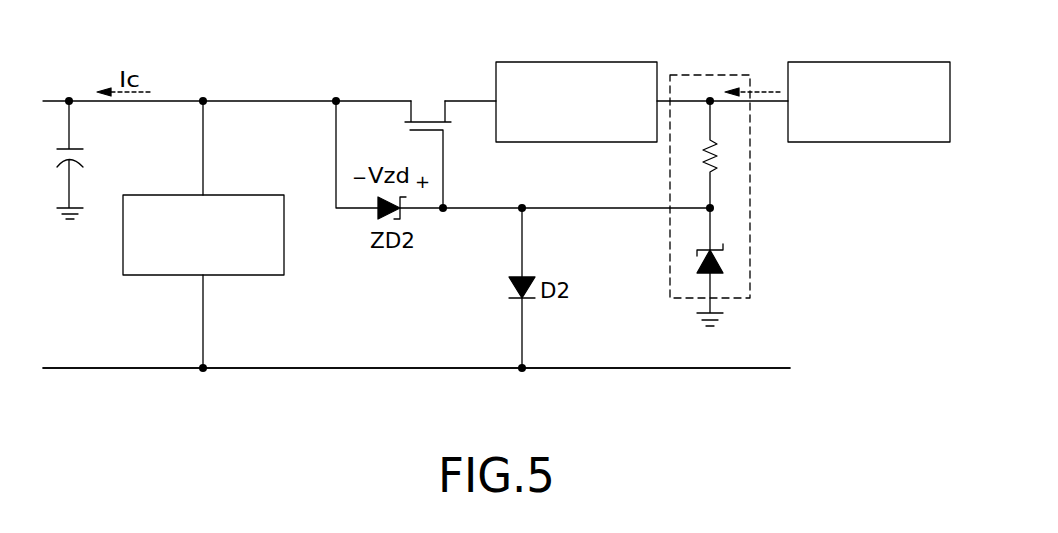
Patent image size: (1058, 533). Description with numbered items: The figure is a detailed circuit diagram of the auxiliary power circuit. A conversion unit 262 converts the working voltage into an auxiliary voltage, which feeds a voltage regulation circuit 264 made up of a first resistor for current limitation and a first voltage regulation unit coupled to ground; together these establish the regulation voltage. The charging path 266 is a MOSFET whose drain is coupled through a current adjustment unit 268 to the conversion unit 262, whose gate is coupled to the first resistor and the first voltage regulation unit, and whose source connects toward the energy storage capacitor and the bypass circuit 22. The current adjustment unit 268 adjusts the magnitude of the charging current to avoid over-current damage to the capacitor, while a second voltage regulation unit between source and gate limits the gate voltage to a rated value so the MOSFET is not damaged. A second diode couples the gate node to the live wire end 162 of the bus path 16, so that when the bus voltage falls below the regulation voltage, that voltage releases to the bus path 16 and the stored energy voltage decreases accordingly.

The bus path 16 is at (316, 392).
The bypass circuit 22 is at (213, 200).
The live wire end 162 is at (357, 101).
The conversion unit 262 is at (868, 62).
The voltage regulation circuit 264 is at (710, 75).
The charging path 266 is at (428, 121).
The current adjustment unit 268 is at (580, 62).